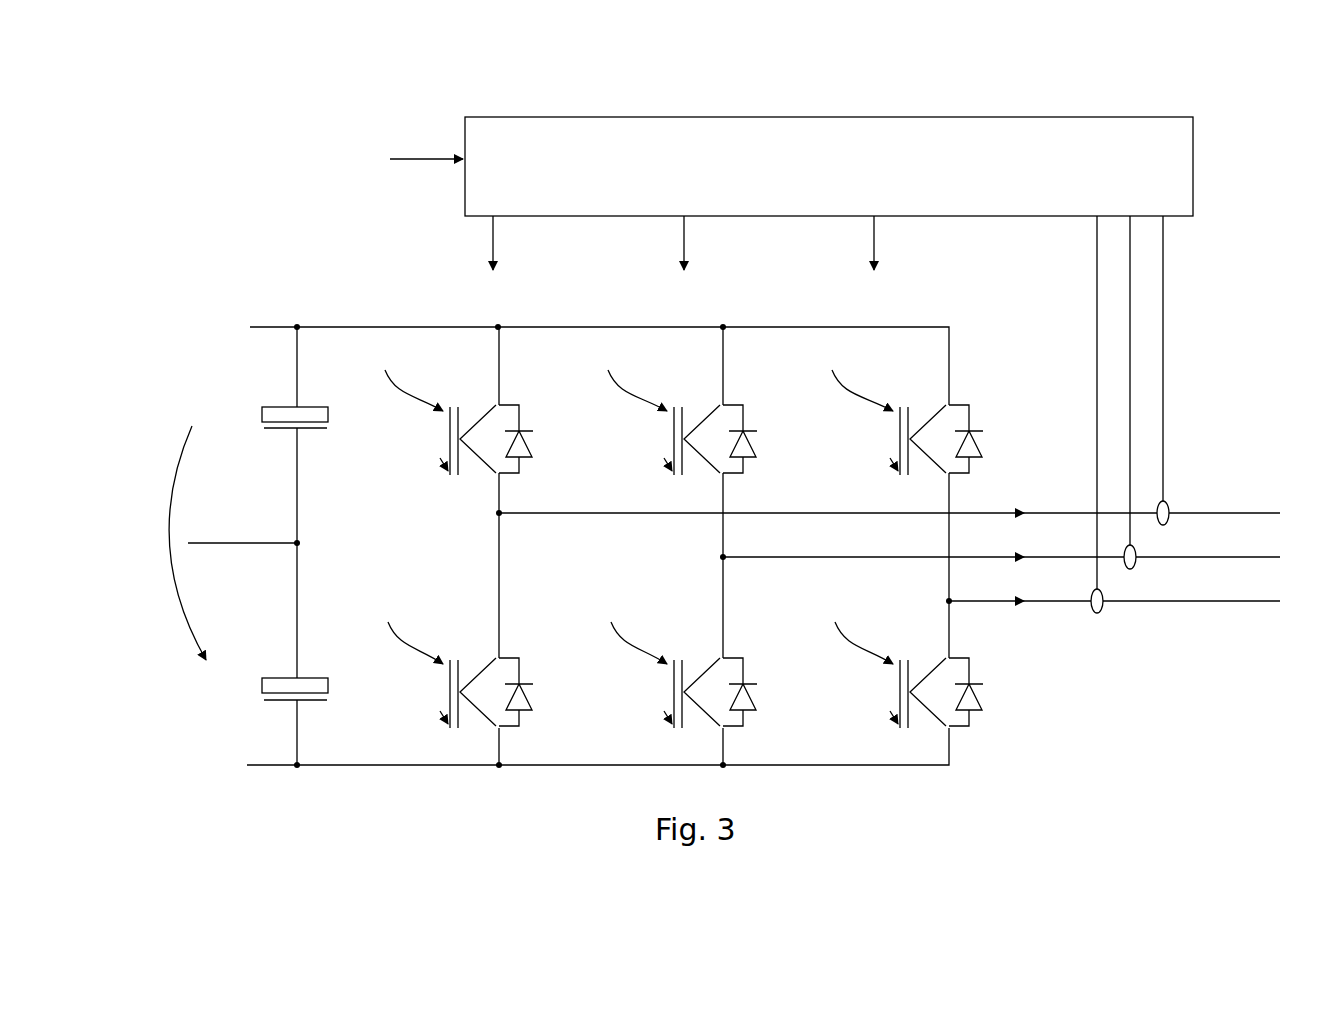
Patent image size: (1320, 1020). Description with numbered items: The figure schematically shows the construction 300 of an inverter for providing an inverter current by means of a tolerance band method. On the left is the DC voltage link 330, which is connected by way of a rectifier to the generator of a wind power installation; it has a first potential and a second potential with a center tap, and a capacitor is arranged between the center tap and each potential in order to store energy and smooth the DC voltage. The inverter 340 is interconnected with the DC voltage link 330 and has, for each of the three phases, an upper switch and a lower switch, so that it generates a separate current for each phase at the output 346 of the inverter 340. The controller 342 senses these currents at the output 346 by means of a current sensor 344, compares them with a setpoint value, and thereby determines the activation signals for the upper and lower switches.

The construction 300 is at (1232, 163).
The DC voltage link 330 is at (282, 283).
The inverter 340 is at (972, 766).
The controller 342 is at (1150, 102).
The current sensor 344 is at (1212, 366).
The output 346 is at (1049, 670).